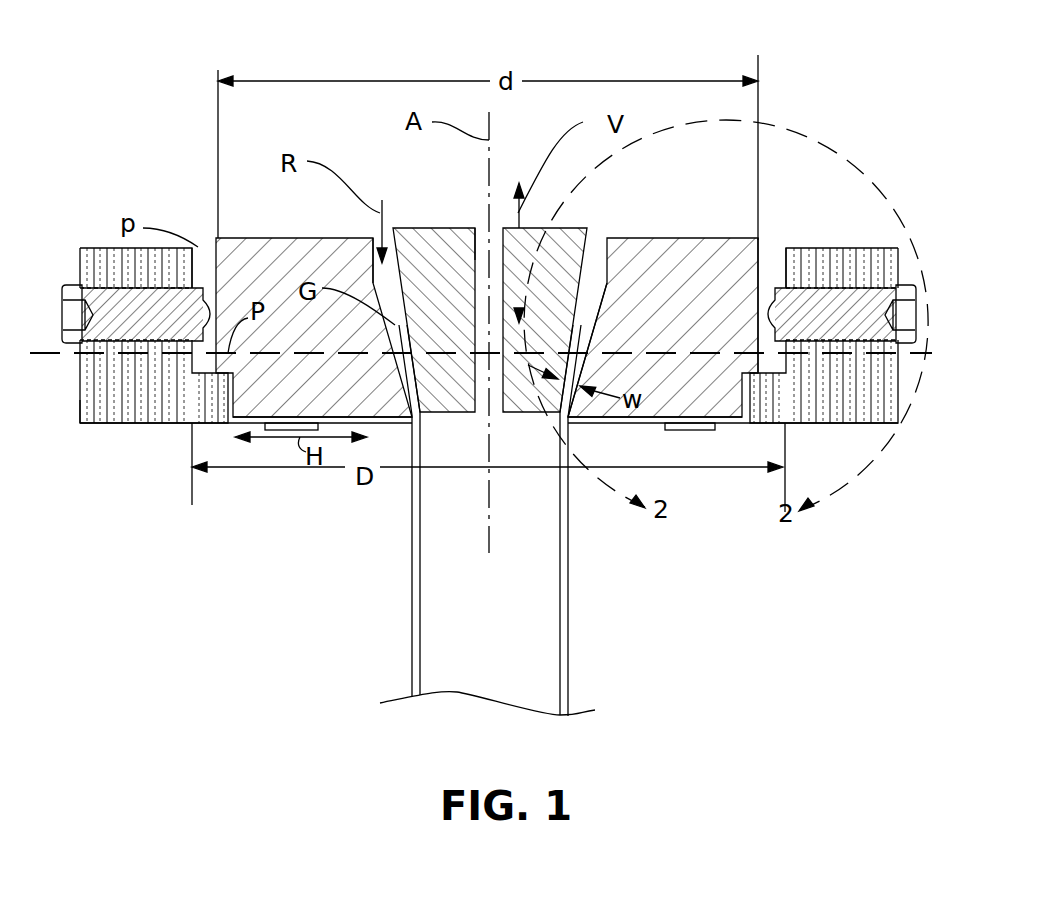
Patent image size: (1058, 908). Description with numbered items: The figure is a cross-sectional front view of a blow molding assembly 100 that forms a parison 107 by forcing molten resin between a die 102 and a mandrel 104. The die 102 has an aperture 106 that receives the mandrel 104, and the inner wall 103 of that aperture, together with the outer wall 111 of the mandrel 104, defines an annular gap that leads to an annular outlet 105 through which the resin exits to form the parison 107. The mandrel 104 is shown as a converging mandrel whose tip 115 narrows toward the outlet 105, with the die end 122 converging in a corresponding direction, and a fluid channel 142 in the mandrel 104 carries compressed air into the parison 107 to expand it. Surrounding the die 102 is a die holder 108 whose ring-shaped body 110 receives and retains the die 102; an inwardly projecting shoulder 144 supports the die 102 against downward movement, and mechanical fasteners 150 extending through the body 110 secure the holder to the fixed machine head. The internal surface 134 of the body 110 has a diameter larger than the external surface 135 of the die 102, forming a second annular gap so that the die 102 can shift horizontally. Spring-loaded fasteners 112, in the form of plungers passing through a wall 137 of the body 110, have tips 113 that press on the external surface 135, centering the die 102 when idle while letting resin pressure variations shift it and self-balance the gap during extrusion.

The blow molding assembly 100 is at (163, 112).
The die 102 is at (675, 336).
The inner wall 103 is at (594, 250).
The mandrel 104 is at (463, 336).
The annular outlet 105 is at (577, 432).
The aperture 106 is at (380, 303).
The parison 107 is at (421, 563).
The die holder 108 is at (113, 222).
The ring-shaped body 110 is at (867, 240).
The outer wall 111 is at (372, 247).
The spring-loaded fasteners 112 is at (118, 298).
The tip 113 is at (765, 302).
The tip of the mandrel 115 is at (408, 393).
The die end 122 is at (597, 327).
The internal surface 134 is at (778, 246).
The external surface 135 is at (215, 240).
The wall 137 is at (80, 408).
The fluid channel 142 is at (470, 242).
The inwardly projecting shoulder 144 is at (777, 370).
The mechanical fasteners 150 is at (690, 433).